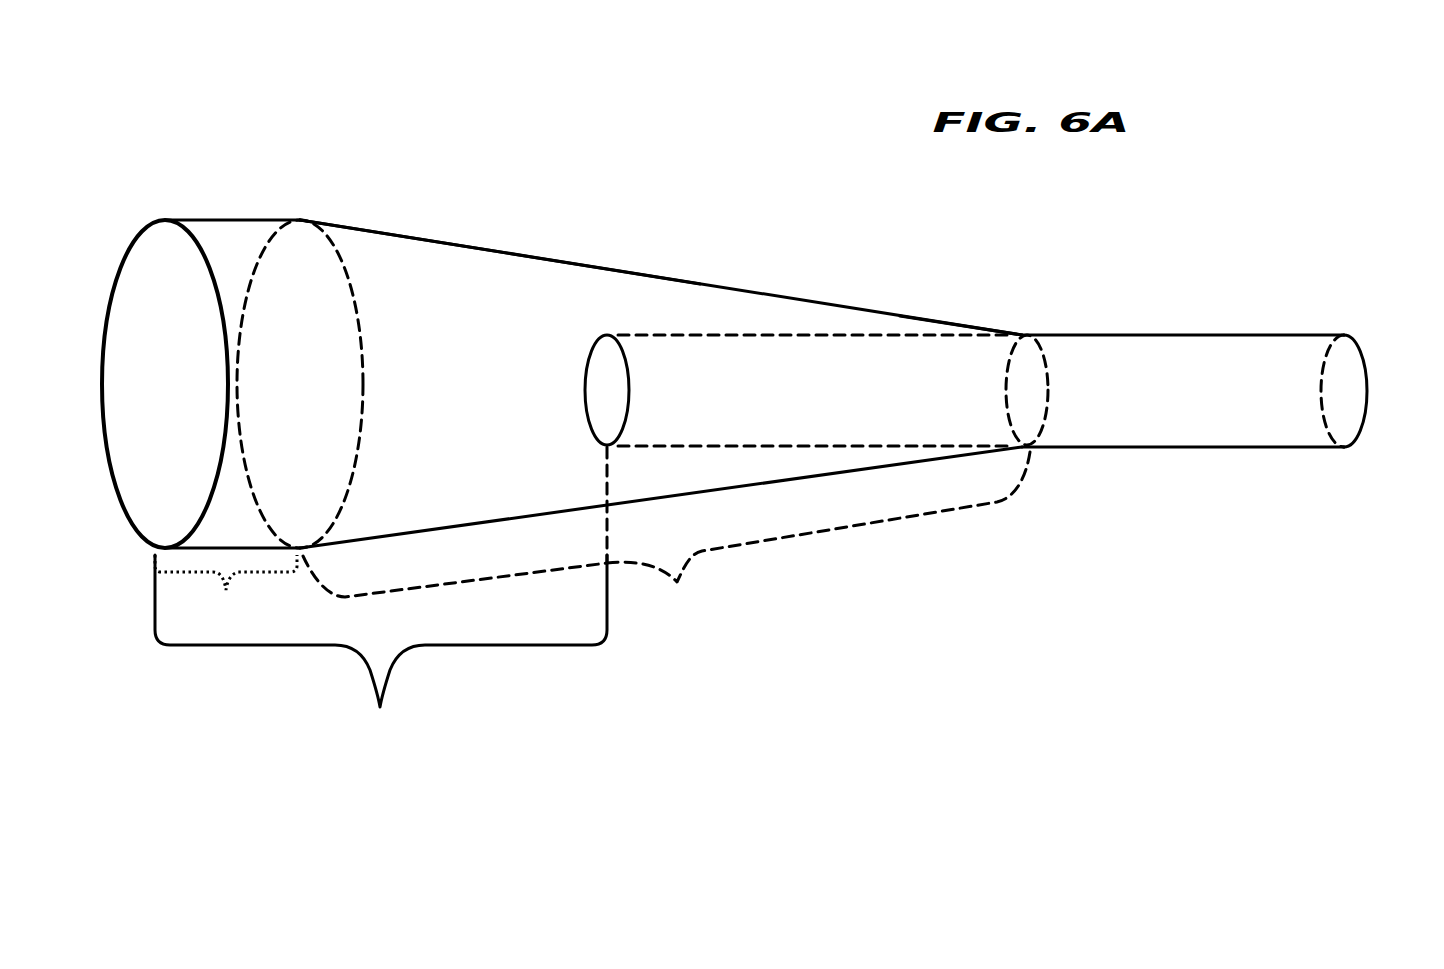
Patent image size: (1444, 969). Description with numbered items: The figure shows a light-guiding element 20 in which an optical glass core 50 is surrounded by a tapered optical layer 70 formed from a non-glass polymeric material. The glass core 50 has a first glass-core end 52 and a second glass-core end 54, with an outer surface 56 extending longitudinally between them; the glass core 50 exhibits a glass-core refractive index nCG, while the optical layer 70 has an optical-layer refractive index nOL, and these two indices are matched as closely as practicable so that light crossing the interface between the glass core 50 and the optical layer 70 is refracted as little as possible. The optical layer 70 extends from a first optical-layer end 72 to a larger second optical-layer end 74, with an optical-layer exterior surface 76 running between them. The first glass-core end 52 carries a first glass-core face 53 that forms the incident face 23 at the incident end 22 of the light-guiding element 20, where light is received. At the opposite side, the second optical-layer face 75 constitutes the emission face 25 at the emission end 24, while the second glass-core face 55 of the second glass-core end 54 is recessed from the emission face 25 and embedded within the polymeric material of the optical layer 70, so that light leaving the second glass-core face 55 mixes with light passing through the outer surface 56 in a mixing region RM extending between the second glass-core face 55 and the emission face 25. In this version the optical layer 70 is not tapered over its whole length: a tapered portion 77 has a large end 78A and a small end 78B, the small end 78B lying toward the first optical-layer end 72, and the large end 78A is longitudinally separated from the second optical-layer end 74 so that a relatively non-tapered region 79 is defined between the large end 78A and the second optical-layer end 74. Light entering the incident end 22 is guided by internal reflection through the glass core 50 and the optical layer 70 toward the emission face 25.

The light-guiding element 20 is at (803, 178).
The optical layer 70 is at (507, 290).
The second optical-layer end 74 is at (150, 219).
The second optical-layer face 75 is at (150, 333).
The emission face 25 is at (150, 407).
The emission end 24 is at (195, 222).
The large end of tapered portion 78A is at (310, 221).
The optical-layer exterior surface 76 is at (445, 243).
The second glass-core end 54 is at (638, 353).
The second glass-core face 55 is at (608, 377).
The optical glass core 50 is at (775, 367).
The optical-layer refractive index nOL is at (692, 315).
The first optical-layer end 72 is at (999, 328).
The small end of tapered portion 78B is at (1030, 333).
The outer surface 56 is at (1209, 451).
The glass-core refractive index nCG is at (1165, 368).
The first glass-core end 52 is at (1315, 430).
The incident face 23 is at (1343, 379).
The first glass-core face 53 is at (1343, 405).
The incident end 22 is at (1329, 458).
The tapered portion 77 is at (677, 580).
The relatively non-tapered region 79 is at (226, 592).
The mixing region RM is at (381, 667).